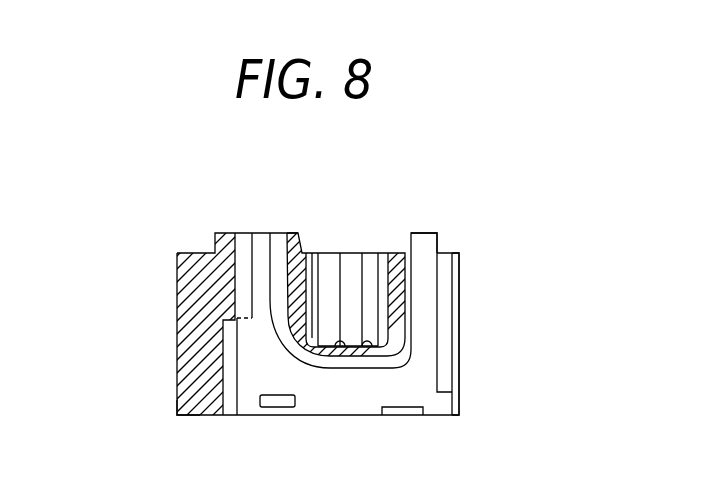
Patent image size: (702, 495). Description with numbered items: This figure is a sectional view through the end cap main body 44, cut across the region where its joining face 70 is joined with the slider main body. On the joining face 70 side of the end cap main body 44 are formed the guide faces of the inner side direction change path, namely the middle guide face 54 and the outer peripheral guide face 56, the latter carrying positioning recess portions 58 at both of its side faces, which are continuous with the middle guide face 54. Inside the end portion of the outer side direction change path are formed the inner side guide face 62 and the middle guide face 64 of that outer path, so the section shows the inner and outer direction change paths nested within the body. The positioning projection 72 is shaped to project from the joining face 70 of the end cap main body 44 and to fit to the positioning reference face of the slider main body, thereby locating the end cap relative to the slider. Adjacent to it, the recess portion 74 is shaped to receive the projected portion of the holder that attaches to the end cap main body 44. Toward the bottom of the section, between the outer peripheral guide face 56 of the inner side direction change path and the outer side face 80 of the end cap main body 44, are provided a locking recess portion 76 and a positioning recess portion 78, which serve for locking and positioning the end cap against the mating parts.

The end cap main body 44 is at (164, 303).
The joining face 70 is at (190, 253).
The outer side face 80 is at (188, 415).
The inner side guide face 62 is at (403, 353).
The middle guide face 64 is at (415, 292).
The positioning recess portions 58 is at (381, 275).
The outer peripheral guide face 56 is at (340, 347).
The middle guide face 54 is at (367, 341).
The positioning projection 72 is at (422, 238).
The recess portion 74 is at (446, 262).
The locking recess portion 76 is at (280, 405).
The positioning recess portion 78 is at (403, 413).